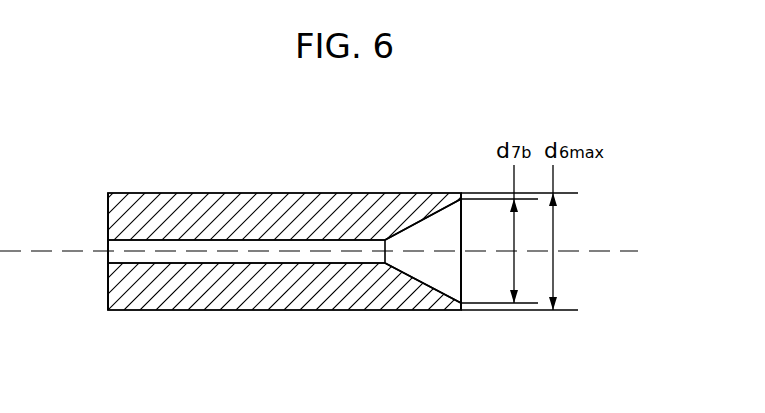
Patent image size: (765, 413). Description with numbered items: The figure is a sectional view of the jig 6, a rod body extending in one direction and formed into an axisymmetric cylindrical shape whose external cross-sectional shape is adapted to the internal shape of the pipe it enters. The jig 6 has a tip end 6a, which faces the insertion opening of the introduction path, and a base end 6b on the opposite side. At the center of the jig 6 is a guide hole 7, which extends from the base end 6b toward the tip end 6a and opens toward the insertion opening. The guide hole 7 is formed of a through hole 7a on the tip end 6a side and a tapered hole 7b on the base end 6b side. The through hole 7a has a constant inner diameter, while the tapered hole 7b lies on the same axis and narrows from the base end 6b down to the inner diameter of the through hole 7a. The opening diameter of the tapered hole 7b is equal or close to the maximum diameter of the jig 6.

The jig 6 is at (230, 191).
The tip end 6a is at (108, 217).
The base end 6b is at (461, 221).
The guide hole 7 is at (108, 258).
The through hole 7a is at (248, 262).
The tapered hole 7b is at (432, 290).